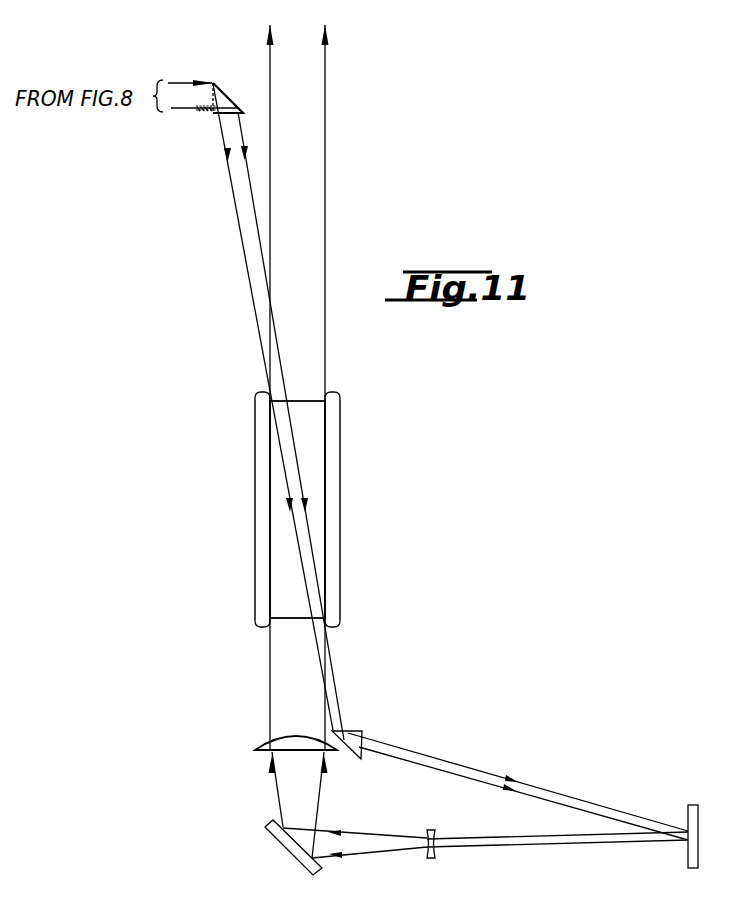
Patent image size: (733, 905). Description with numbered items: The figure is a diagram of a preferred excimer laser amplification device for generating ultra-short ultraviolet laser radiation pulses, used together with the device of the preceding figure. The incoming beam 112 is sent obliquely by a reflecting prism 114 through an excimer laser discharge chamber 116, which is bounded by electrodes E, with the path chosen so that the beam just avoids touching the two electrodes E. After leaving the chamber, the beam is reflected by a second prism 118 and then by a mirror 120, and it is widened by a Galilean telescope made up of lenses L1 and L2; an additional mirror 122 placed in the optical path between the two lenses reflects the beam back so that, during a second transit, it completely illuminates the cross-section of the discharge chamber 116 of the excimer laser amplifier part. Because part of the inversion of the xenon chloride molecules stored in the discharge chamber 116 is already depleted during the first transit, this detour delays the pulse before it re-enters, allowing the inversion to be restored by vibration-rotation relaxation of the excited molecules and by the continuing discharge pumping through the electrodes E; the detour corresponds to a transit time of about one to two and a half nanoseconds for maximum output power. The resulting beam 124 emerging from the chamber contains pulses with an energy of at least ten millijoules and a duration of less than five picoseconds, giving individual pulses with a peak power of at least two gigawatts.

The beam 112 is at (183, 83).
The reflecting prism 114 is at (208, 118).
The excimer laser discharge chamber 116 is at (308, 475).
The second prism 118 is at (357, 722).
The mirror 120 is at (687, 817).
The additional mirror 122 is at (287, 853).
The resulting beam 124 is at (303, 112).
The electrodes E is at (260, 428).
The lens L1 is at (433, 860).
The lens L2 is at (283, 743).